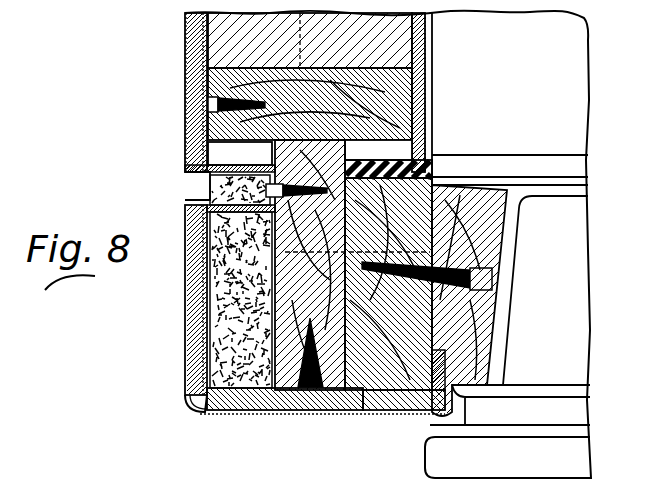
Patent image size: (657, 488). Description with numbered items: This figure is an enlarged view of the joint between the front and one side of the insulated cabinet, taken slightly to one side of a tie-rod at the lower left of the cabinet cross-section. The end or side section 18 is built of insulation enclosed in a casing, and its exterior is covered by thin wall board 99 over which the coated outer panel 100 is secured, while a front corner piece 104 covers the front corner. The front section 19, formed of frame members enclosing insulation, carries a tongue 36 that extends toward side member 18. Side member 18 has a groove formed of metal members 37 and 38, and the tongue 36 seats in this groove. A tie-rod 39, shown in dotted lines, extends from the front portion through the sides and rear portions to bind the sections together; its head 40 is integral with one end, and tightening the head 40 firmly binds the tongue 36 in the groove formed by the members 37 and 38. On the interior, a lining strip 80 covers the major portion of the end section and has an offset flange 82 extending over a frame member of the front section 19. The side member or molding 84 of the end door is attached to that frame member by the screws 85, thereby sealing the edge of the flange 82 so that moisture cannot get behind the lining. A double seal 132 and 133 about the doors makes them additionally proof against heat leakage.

The end or side section 18 is at (187, 21).
The metal member 38 is at (192, 80).
The outer panel 100 is at (186, 92).
The wall board 99 is at (188, 123).
The tie-rod 39 is at (300, 45).
The metal member 37 is at (416, 82).
The lining strip 80 is at (418, 100).
The tongue 36 is at (378, 164).
The offset flange 82 is at (442, 174).
The side member or molding 84 is at (478, 200).
The screw 85 is at (486, 283).
The seal 133 is at (511, 388).
The seal 132 is at (462, 428).
The front section 19 is at (404, 405).
The head of the tie-rod 40 is at (278, 418).
The front corner piece 104 is at (187, 402).